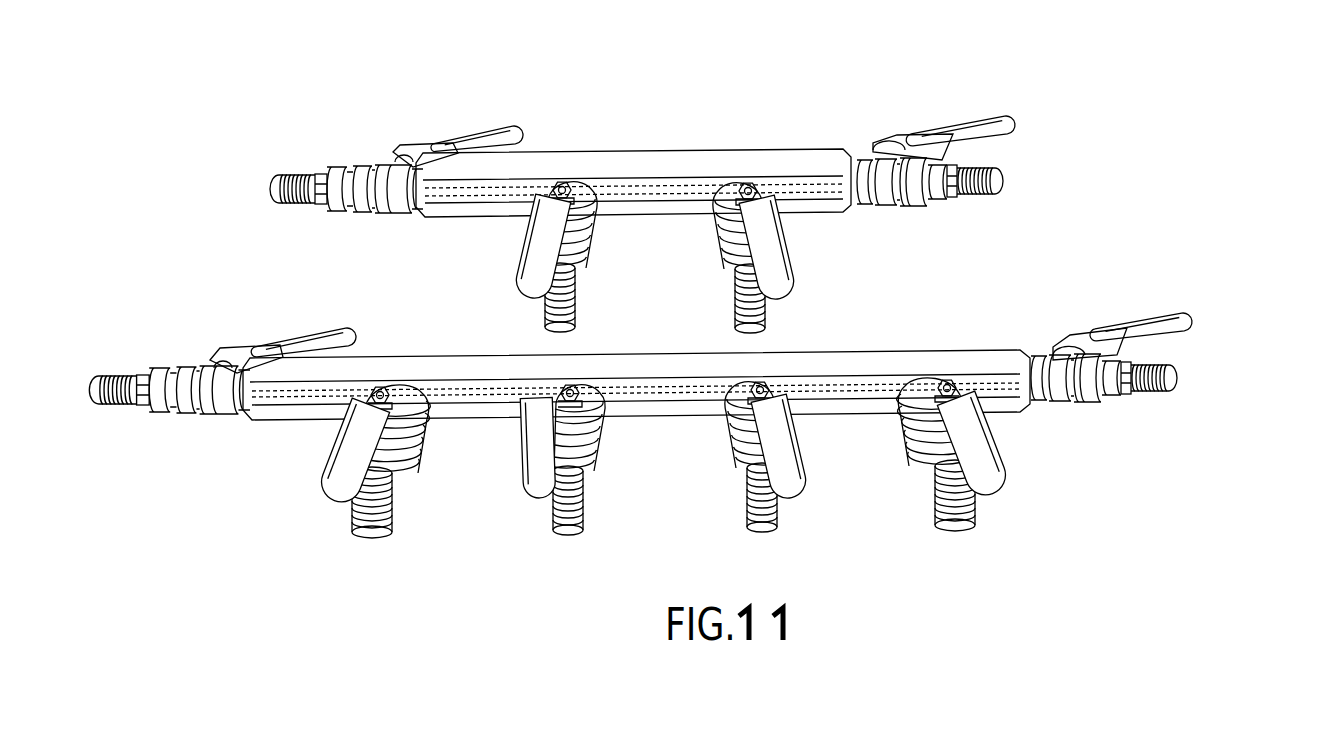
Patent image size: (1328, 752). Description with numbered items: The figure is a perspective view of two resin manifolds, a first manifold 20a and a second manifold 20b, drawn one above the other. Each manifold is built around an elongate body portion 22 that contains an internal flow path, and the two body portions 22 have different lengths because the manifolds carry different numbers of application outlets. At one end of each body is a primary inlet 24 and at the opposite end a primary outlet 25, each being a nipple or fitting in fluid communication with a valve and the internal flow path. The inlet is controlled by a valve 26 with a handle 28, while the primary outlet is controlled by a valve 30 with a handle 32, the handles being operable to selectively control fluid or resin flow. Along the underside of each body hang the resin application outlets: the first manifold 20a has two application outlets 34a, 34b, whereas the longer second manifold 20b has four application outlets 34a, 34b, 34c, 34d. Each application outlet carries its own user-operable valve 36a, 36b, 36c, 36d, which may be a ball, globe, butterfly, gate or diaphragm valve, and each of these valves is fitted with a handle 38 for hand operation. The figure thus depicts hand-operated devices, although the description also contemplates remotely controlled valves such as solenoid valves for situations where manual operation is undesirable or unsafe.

The first manifold 20a is at (1096, 108).
The second manifold 20b is at (1216, 256).
The elongate body portion 22 is at (652, 158).
The primary inlet 24 is at (313, 176).
The primary outlet 25 is at (323, 170).
The valve 26 is at (383, 165).
The handle 28 is at (447, 136).
The primary outlet valve 30 is at (938, 200).
The handle 32 is at (914, 146).
The application outlet 34a is at (540, 300).
The application outlet 34b is at (735, 289).
The application outlet 34c is at (752, 505).
The application outlet 34d is at (946, 505).
The user-operable valve 36a is at (602, 227).
The user-operable valve 36b is at (722, 246).
The user-operable valve 36c is at (732, 433).
The user-operable valve 36d is at (922, 440).
The handle 38 is at (535, 256).